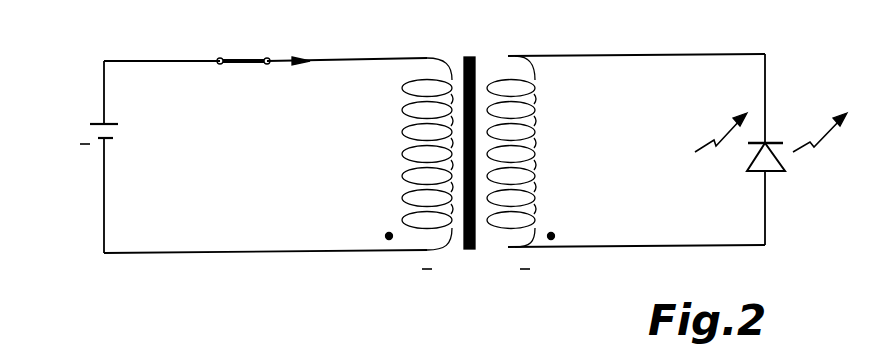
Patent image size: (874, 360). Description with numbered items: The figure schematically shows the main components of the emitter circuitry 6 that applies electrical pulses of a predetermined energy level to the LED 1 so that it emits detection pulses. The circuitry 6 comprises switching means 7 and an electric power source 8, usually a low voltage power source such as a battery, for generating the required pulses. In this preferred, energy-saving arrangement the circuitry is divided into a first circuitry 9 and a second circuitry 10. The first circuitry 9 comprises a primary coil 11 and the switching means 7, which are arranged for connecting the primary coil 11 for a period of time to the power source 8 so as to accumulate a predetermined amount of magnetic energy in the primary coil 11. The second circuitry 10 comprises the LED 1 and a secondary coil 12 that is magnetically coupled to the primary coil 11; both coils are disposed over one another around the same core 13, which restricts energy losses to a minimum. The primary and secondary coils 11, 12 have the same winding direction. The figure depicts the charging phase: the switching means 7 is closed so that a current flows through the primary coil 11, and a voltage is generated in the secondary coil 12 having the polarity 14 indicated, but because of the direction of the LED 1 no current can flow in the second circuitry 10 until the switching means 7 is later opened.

The LED 1 is at (767, 157).
The circuitry 6 is at (146, 45).
The switching means 7 is at (247, 56).
The electric power source 8 is at (74, 126).
The first circuitry 9 is at (277, 262).
The second circuitry 10 is at (637, 255).
The primary coil 11 is at (404, 156).
The secondary coil 12 is at (537, 158).
The core 13 is at (472, 55).
The polarity 14 is at (548, 42).